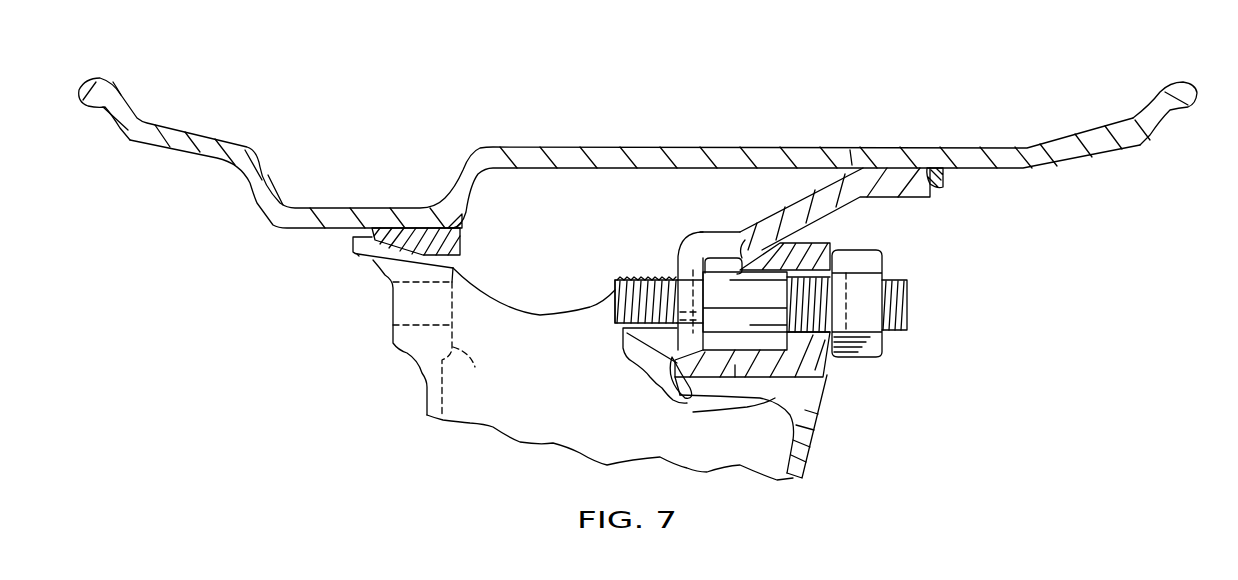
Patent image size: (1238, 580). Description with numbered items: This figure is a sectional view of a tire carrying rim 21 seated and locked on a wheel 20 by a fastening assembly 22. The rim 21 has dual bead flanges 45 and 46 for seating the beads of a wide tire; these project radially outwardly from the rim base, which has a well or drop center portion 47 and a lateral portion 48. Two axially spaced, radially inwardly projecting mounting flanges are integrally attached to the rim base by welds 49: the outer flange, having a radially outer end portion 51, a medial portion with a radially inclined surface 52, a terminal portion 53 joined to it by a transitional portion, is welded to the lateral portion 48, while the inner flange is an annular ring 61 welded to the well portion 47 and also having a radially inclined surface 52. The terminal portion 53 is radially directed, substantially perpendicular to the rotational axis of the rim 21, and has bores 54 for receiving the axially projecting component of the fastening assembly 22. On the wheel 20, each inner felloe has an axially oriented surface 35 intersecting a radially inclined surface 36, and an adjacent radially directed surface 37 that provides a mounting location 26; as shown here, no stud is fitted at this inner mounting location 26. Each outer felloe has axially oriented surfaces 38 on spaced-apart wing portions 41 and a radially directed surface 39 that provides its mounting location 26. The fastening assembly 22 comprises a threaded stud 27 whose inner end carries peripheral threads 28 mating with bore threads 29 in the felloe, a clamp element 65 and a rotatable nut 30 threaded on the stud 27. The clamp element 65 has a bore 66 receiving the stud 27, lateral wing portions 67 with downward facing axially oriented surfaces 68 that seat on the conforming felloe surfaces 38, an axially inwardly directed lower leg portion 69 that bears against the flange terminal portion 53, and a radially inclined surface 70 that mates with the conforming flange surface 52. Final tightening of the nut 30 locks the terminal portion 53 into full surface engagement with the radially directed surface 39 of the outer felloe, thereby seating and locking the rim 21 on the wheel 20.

The wheel 20 is at (392, 447).
The tire carrying rim 21 is at (603, 143).
The fastening assembly 22 is at (906, 249).
The mounting location 26 is at (388, 316).
The threaded stud 27 is at (908, 307).
The peripheral threads 28 is at (610, 298).
The bore threads 29 is at (615, 280).
The nut 30 is at (870, 353).
The axially oriented surface 35 is at (443, 265).
The radially inclined surface 36 is at (388, 230).
The radially directed surface 37 is at (472, 370).
The axially oriented surface 38 is at (727, 270).
The radially directed surface 39 is at (675, 395).
The wing portion 41 is at (817, 397).
The bead flange 45 is at (123, 93).
The bead flange 46 is at (1153, 92).
The well portion 47 is at (328, 210).
The lateral portion 48 is at (880, 147).
The weld 49 is at (463, 222).
The radially outer end portion 51 is at (908, 190).
The radially inclined surface 52 is at (368, 262).
The terminal portion 53 is at (697, 393).
The bore 54 is at (693, 315).
The annular ring 61 is at (457, 247).
The clamp element 65 is at (823, 378).
The bore 66 is at (852, 313).
The lateral wing portion 67 is at (833, 248).
The axially oriented surface 68 is at (742, 272).
The lower leg portion 69 is at (733, 368).
The radially inclined surface 70 is at (760, 248).